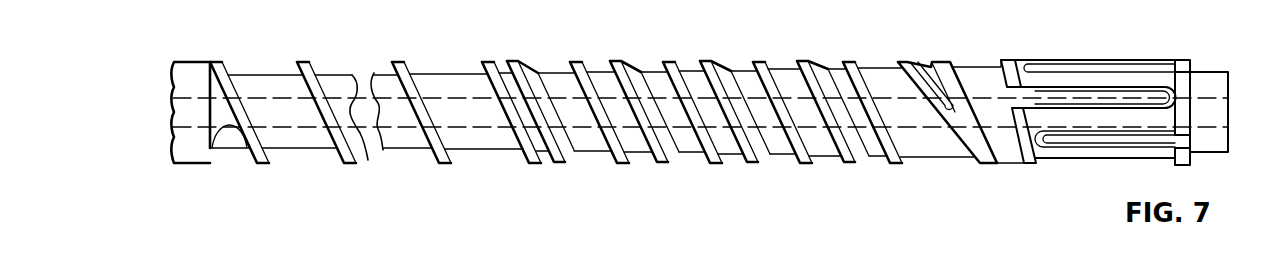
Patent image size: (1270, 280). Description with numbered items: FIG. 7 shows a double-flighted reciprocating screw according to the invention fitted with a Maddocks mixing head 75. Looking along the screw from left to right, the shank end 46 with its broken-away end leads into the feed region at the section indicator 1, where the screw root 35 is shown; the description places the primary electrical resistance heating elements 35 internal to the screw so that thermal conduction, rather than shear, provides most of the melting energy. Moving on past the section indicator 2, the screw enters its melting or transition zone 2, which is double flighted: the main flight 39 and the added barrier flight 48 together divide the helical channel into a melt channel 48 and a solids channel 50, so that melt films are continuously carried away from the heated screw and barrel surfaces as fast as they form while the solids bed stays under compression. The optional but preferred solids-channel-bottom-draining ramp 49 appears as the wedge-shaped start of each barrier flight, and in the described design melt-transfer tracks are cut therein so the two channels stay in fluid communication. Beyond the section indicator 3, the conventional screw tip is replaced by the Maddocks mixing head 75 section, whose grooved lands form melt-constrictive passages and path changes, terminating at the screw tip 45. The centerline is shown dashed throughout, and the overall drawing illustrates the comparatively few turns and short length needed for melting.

The screw shank end 46 is at (183, 70).
The electrical resistance heating elements 35 is at (302, 110).
The section line 1 is at (268, 190).
The melting or transition zone 2 is at (480, 190).
The section line 3 is at (1082, 186).
The main flight 39 is at (752, 68).
The melt channel 48 is at (638, 157).
The solids-channel-bottom-draining ramp 49 is at (815, 70).
The solids channel 50 is at (687, 147).
The Maddocks mixing head 75 is at (988, 42).
The screw tip 45 is at (1208, 110).